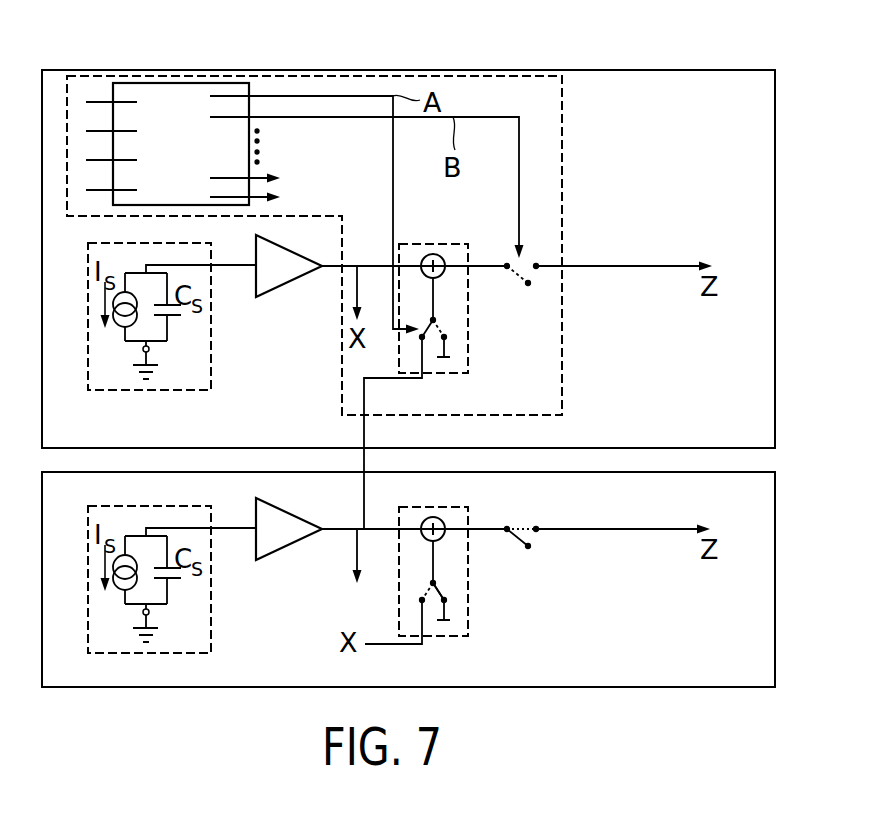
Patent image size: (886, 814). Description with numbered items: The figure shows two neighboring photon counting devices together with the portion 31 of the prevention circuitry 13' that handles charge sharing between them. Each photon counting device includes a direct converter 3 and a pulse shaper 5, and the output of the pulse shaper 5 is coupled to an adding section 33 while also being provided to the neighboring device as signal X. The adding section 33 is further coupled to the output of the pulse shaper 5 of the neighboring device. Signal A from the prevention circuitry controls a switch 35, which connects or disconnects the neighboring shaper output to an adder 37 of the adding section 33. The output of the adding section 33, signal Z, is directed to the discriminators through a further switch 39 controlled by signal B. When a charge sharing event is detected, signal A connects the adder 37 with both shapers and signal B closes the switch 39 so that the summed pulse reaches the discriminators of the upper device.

The prevention circuitry 13' is at (351, 245).
The portion of the prevention circuitry 31 is at (192, 83).
The direct converter 3 is at (211, 360).
The pulse shaper 5 is at (291, 287).
The adding section 33 is at (423, 244).
The switch 35 is at (463, 593).
The adder 37 is at (437, 254).
The further switch 39 is at (538, 250).